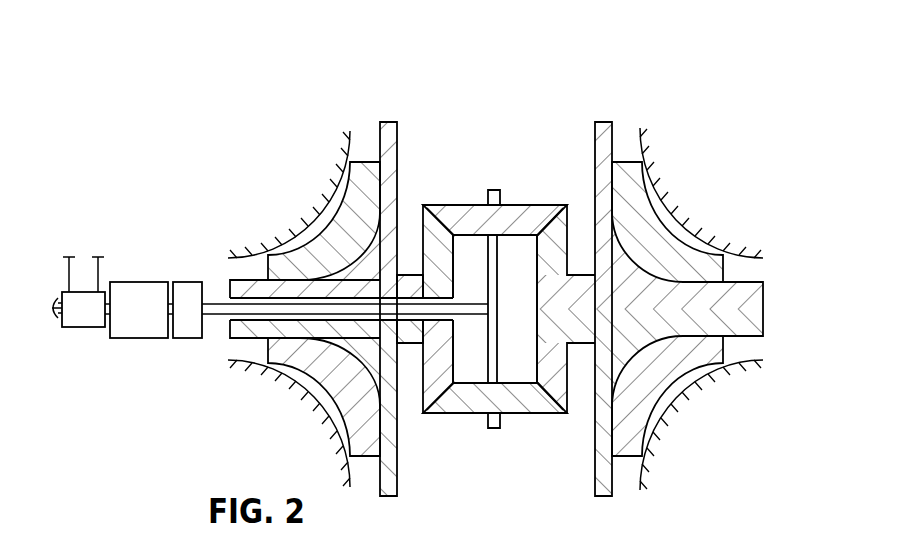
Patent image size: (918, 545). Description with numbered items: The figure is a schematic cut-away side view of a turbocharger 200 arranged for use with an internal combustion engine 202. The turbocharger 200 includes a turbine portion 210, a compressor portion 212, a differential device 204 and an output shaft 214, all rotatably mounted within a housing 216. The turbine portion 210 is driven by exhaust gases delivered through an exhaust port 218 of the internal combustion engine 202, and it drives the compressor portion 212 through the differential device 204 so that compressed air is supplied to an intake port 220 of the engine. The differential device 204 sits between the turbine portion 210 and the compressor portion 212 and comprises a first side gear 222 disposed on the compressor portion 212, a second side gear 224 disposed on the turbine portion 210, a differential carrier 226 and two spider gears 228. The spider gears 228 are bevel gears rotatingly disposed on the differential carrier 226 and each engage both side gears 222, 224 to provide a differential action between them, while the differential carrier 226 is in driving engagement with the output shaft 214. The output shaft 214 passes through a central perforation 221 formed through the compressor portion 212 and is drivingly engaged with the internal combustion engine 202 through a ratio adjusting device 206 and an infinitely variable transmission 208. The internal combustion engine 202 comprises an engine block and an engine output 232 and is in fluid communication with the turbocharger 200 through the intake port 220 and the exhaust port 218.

The turbocharger 200 is at (653, 83).
The internal combustion engine 202 is at (83, 327).
The differential device 204 is at (455, 175).
The ratio adjusting device 206 is at (185, 340).
The infinitely variable transmission 208 is at (138, 340).
The turbine portion 210 is at (763, 311).
The compressor portion 212 is at (228, 292).
The output shaft 214 is at (218, 318).
The housing 216 is at (350, 131).
The exhaust port 218 is at (67, 292).
The intake port 220 is at (98, 290).
The central perforation 221 is at (373, 300).
The first side gear 222 is at (455, 250).
The second side gear 224 is at (537, 368).
The differential carrier 226 is at (502, 247).
The spider gears 228 is at (537, 204).
The engine output 232 is at (53, 318).